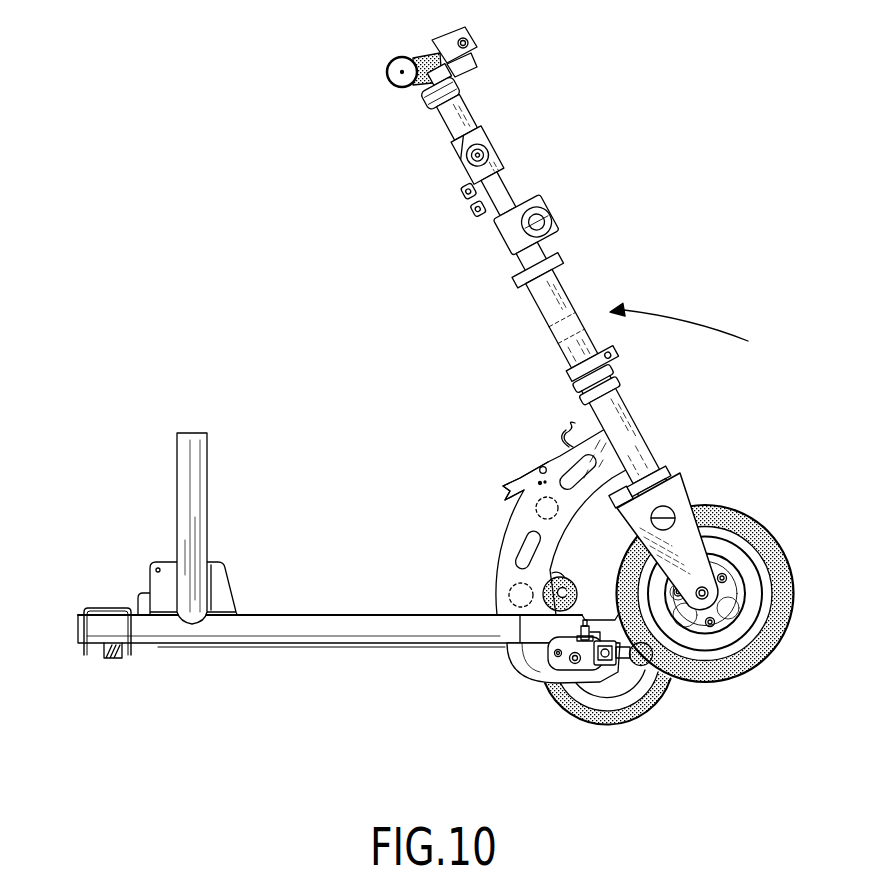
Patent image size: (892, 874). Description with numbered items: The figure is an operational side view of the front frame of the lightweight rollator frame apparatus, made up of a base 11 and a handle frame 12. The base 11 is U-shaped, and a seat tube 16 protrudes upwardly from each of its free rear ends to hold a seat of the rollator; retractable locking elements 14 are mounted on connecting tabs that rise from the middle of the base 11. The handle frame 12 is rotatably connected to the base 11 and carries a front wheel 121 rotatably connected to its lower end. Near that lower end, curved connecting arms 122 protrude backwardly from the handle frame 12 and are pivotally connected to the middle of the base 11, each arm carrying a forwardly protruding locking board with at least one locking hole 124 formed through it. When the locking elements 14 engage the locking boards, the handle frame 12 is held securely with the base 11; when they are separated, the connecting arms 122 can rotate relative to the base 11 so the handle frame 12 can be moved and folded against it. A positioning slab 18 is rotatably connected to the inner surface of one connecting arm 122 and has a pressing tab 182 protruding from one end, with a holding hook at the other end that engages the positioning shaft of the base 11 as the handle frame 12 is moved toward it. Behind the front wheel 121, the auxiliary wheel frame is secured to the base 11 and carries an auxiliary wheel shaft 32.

The base 11 is at (360, 592).
The handle frame 12 is at (534, 146).
The front wheel 121 is at (718, 520).
The connecting arm 122 is at (510, 557).
The locking hole 124 is at (541, 606).
The locking element 14 is at (550, 608).
The seat tube 16 is at (197, 492).
The positioning slab 18 is at (498, 472).
The pressing tab 182 is at (568, 428).
The auxiliary wheel shaft 32 is at (544, 708).